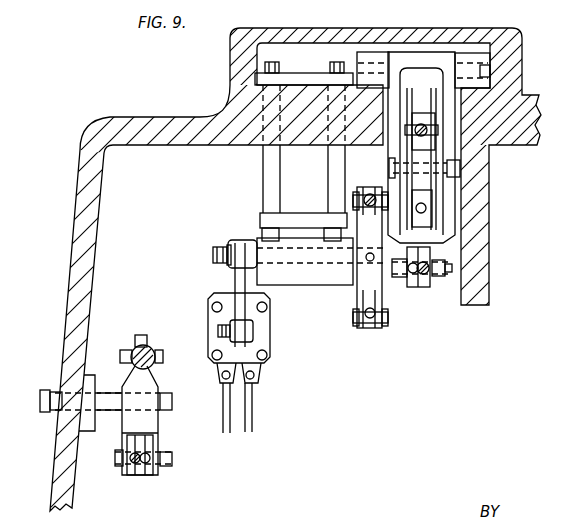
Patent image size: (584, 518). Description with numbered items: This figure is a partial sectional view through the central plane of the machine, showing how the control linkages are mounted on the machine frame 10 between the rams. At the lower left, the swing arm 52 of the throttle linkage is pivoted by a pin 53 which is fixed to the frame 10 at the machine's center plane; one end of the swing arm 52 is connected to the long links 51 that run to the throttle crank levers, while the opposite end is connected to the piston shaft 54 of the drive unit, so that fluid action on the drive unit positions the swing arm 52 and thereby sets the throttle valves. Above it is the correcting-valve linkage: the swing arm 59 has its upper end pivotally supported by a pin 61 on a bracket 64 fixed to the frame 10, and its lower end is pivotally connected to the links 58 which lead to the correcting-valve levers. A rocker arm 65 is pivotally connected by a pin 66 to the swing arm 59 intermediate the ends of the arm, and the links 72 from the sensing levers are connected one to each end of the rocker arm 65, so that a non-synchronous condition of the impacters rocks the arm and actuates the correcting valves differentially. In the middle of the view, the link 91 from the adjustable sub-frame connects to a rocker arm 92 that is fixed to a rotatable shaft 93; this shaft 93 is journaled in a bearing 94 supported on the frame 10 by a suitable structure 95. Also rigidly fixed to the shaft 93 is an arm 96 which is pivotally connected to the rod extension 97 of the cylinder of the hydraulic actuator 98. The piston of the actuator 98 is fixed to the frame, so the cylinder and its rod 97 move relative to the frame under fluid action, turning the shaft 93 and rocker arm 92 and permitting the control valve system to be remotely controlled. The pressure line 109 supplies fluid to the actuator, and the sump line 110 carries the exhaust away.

The machine frame 10 is at (538, 104).
The long link 51 is at (146, 476).
The swing arm 52 is at (161, 429).
The pin 53 is at (173, 401).
The piston shaft 54 is at (137, 347).
The link 58 is at (427, 288).
The swing arm 59 is at (429, 64).
The pin 61 is at (490, 70).
The bracket 64 is at (474, 54).
The rocker arm 65 is at (446, 213).
The pin 66 is at (460, 172).
The link 72 is at (420, 122).
The link 91 is at (372, 190).
The rocker arm 92 is at (385, 302).
The rotatable shaft 93 is at (213, 254).
The bearing 94 is at (300, 279).
The support structure 95 is at (297, 216).
The arm 96 is at (238, 283).
The rod extension 97 is at (222, 337).
The hydraulic actuator 98 is at (265, 347).
The pressure line 109 is at (250, 432).
The sump line 110 is at (225, 432).